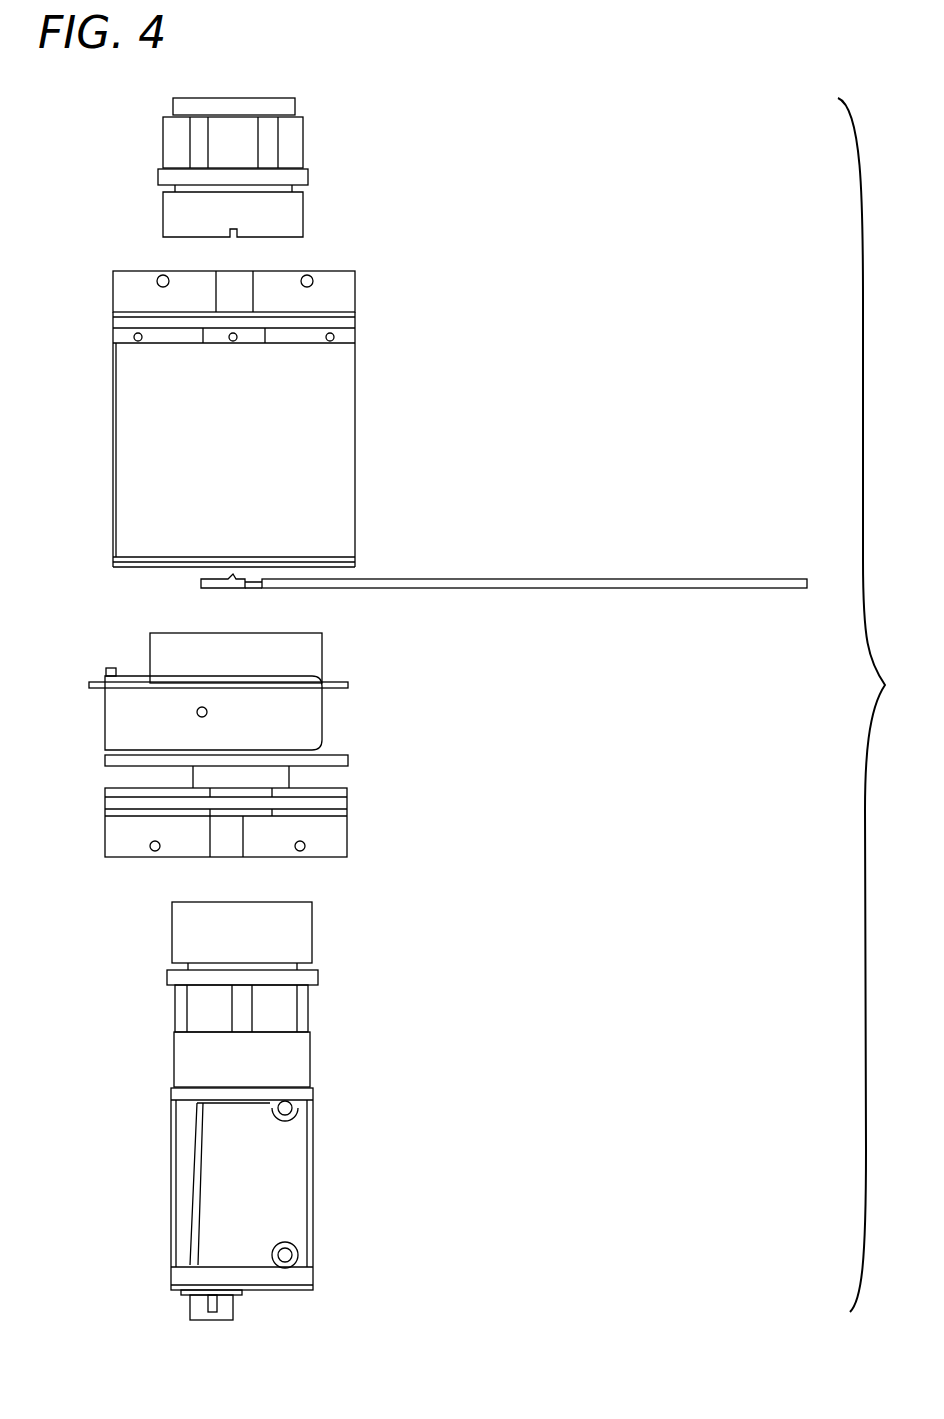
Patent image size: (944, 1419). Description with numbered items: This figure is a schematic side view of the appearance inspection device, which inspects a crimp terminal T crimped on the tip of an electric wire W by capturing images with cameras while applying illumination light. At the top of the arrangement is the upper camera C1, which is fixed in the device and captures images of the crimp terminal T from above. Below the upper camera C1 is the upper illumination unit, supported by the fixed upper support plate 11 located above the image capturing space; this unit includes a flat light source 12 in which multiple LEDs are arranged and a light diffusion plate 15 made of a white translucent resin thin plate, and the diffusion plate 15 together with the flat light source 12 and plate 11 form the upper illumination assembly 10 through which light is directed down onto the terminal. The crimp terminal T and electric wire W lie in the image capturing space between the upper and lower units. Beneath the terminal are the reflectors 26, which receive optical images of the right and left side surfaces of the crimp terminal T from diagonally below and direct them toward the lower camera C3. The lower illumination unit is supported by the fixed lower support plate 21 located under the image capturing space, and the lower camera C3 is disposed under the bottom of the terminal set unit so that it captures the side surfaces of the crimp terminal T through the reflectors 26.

The upper camera C1 is at (303, 138).
The tape feeding unit 10 is at (303, 392).
The upper support plate 11 is at (337, 275).
The flat light source 12 is at (333, 320).
The light diffusion plate 15 is at (338, 413).
The crimp terminal T is at (217, 580).
The electric wire W is at (568, 579).
The reflector 26 is at (322, 652).
The lower support plate 21 is at (348, 838).
The lower camera C3 is at (308, 1005).